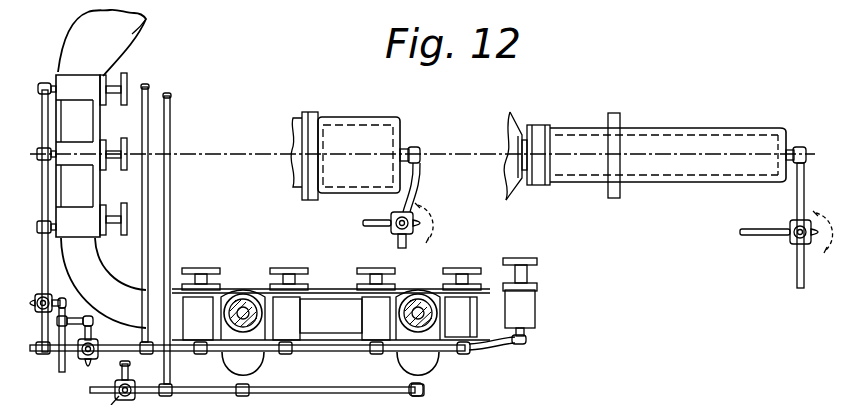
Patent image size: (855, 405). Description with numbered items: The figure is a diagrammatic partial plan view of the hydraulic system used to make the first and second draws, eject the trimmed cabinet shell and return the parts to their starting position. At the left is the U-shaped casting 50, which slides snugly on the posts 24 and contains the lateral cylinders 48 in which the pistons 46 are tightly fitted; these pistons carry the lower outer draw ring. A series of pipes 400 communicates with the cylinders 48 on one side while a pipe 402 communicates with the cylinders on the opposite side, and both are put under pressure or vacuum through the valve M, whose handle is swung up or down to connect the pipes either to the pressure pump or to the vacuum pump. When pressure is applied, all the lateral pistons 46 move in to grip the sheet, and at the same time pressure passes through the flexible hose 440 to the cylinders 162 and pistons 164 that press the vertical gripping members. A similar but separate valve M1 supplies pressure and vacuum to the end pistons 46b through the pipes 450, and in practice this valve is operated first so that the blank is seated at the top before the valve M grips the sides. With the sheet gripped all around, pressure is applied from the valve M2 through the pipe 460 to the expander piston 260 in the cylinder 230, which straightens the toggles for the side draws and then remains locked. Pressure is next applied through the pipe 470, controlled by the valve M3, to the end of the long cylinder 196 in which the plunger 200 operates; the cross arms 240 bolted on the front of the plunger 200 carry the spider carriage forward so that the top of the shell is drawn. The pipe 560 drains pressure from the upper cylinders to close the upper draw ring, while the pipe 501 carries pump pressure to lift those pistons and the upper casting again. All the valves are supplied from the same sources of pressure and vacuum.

The U-shaped casting 50 is at (107, 32).
The end piston 46b is at (113, 97).
The pipe 450 is at (48, 190).
The pipe 402 is at (150, 190).
The pipe 501 is at (170, 213).
The valve M1 is at (50, 297).
The valve M is at (82, 358).
The pipe 400 is at (303, 352).
The pipe 560 is at (328, 389).
The cylinder 48 is at (488, 311).
The post 24 is at (243, 299).
The piston 46 is at (198, 273).
The cylinder 162 is at (535, 300).
The piston 164 is at (530, 269).
The flexible hose 440 is at (481, 346).
The expander piston 260 is at (296, 126).
The cylinder 230 is at (340, 116).
The pipe 460 is at (419, 180).
The valve M2 is at (391, 217).
The cross arms 240 is at (512, 122).
The plunger 200 is at (527, 142).
The cylinder 196 is at (644, 128).
The pipe 470 is at (797, 197).
The valve M3 is at (792, 243).